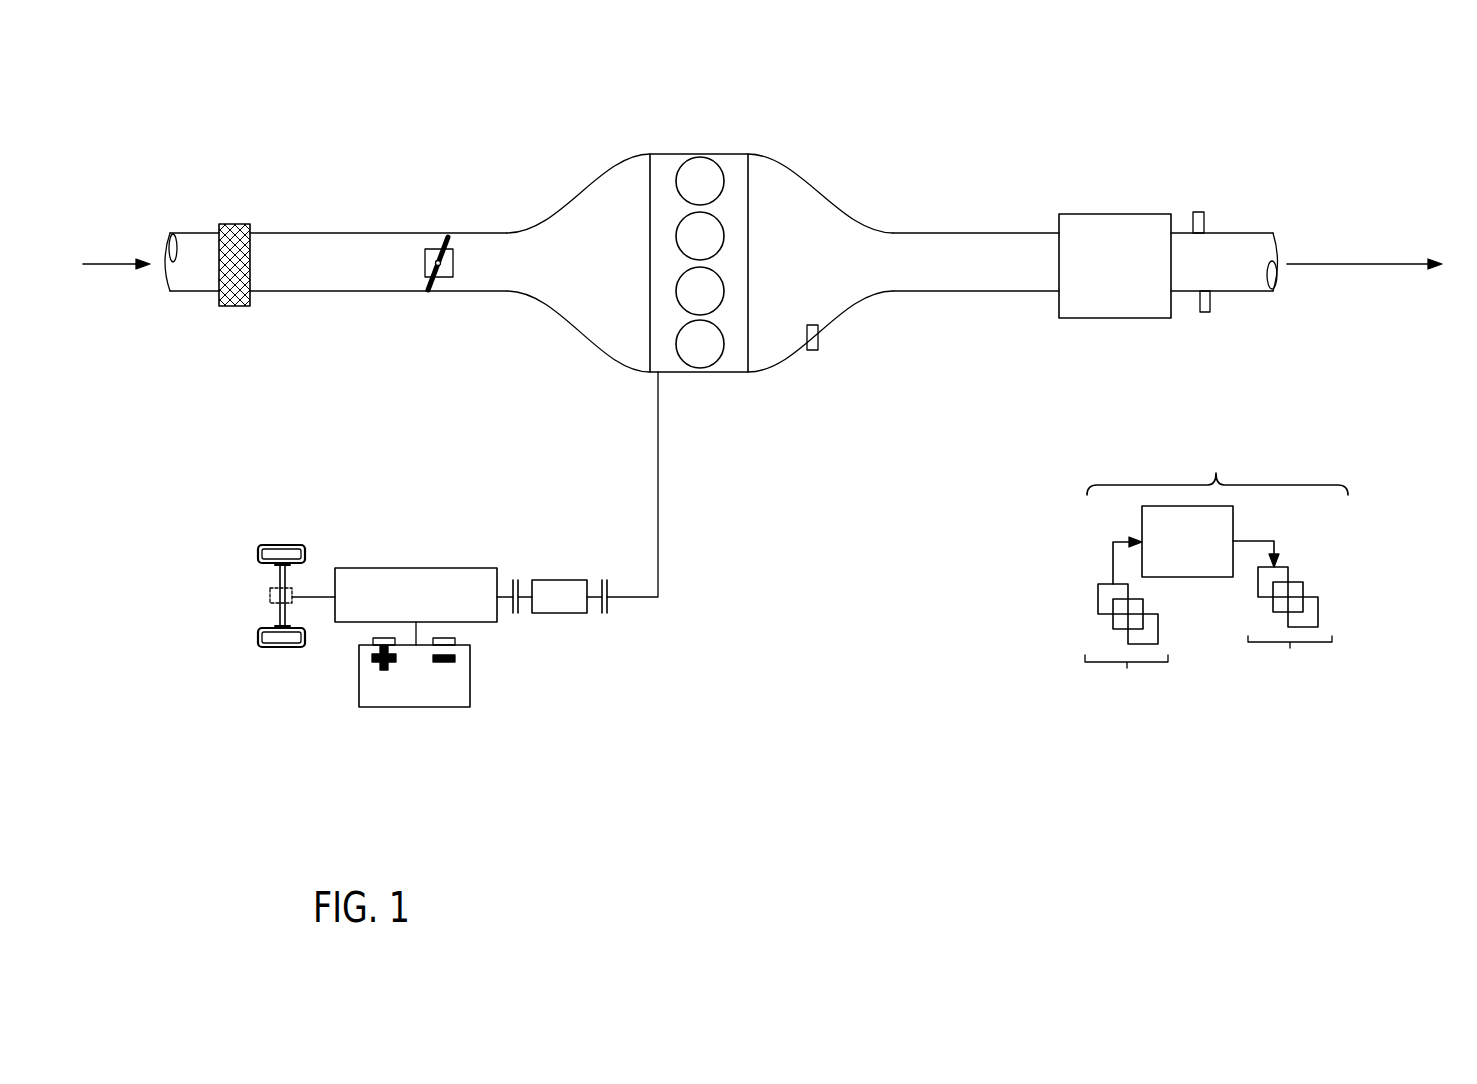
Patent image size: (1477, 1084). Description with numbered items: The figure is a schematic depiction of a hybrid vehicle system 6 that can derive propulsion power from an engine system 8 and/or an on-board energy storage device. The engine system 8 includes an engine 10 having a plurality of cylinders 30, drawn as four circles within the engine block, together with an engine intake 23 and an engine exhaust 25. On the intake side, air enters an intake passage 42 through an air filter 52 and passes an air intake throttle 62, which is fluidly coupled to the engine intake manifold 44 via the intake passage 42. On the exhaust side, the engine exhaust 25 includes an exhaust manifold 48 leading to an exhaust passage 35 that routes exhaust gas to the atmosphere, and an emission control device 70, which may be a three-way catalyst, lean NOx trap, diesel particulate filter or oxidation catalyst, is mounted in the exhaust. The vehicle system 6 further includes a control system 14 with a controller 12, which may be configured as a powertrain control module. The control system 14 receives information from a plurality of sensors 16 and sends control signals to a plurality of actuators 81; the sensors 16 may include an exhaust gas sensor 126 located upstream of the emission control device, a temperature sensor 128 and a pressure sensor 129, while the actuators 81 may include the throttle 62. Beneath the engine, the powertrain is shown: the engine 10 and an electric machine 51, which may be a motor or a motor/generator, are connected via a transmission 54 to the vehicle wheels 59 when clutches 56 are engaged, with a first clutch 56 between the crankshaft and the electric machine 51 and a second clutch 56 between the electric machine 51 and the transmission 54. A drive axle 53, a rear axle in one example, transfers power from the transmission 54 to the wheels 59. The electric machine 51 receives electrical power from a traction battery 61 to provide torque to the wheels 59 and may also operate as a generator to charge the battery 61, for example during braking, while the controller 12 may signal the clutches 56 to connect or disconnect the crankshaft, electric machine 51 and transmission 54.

The hybrid vehicle system 6 is at (181, 129).
The engine system 8 is at (1173, 192).
The engine 10 is at (719, 263).
The controller 12 is at (1187, 541).
The control system 14 is at (1216, 571).
The sensors 16 is at (1126, 624).
The engine intake 23 is at (570, 180).
The engine exhaust 25 is at (866, 185).
The cylinders 30 is at (722, 176).
The exhaust passage 35 is at (1253, 233).
The intake passage 42 is at (197, 293).
The engine intake manifold 44 is at (594, 274).
The exhaust manifold 48 is at (815, 274).
The electric machine 51 is at (557, 615).
The air filter 52 is at (235, 224).
The drive axle 53 is at (270, 596).
The transmission 54 is at (360, 625).
The clutches 56 is at (520, 582).
The vehicle wheels 59 is at (280, 648).
The traction battery 61 is at (418, 709).
The air intake throttle 62 is at (453, 268).
The emission control device 70 is at (1103, 214).
The actuators 81 is at (1282, 617).
The exhaust gas sensor 126 is at (818, 330).
The temperature sensor 128 is at (1205, 313).
The pressure sensor 129 is at (1199, 212).